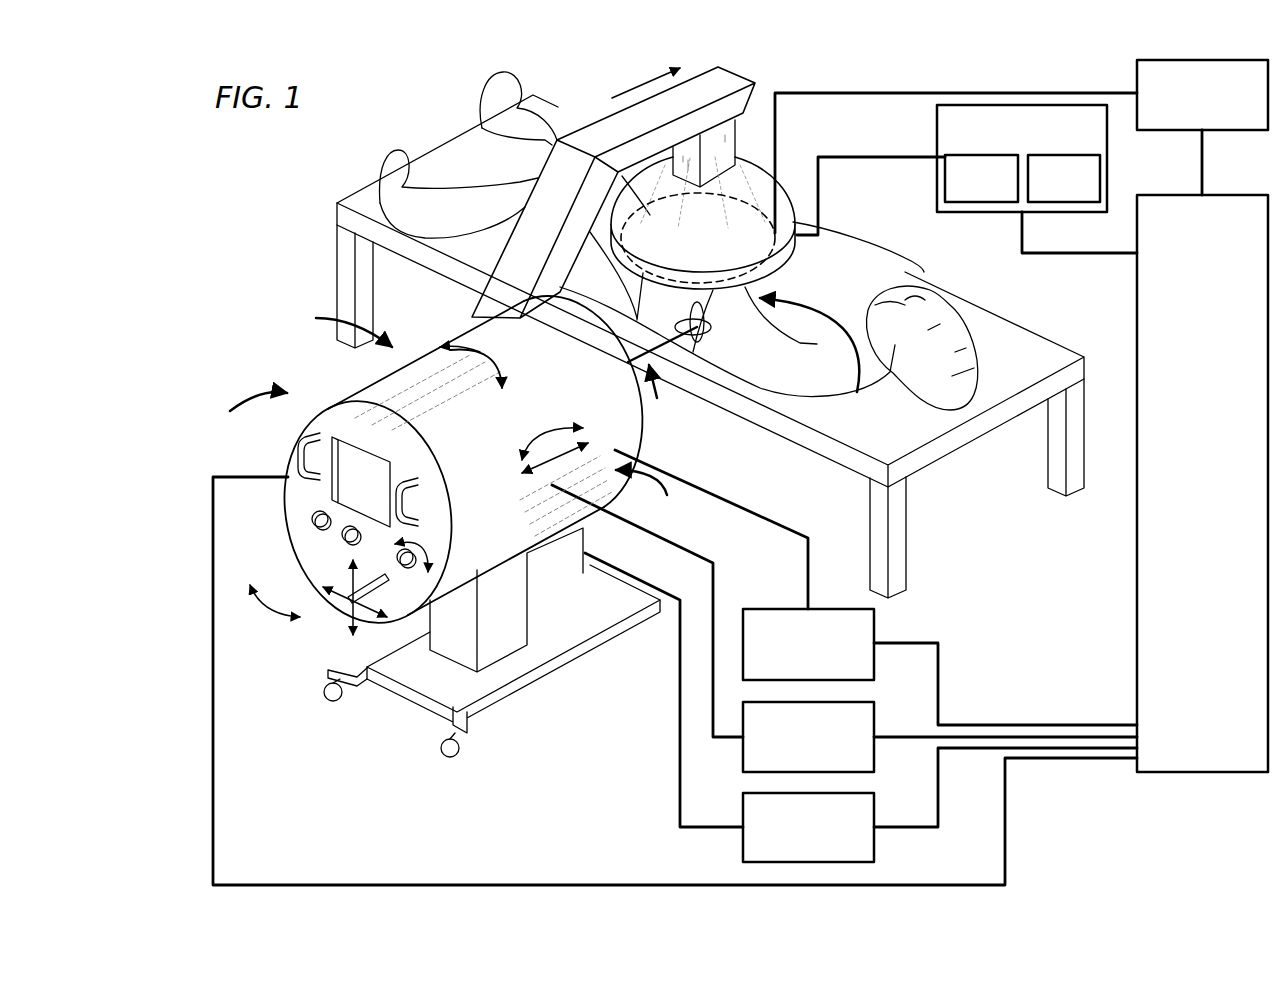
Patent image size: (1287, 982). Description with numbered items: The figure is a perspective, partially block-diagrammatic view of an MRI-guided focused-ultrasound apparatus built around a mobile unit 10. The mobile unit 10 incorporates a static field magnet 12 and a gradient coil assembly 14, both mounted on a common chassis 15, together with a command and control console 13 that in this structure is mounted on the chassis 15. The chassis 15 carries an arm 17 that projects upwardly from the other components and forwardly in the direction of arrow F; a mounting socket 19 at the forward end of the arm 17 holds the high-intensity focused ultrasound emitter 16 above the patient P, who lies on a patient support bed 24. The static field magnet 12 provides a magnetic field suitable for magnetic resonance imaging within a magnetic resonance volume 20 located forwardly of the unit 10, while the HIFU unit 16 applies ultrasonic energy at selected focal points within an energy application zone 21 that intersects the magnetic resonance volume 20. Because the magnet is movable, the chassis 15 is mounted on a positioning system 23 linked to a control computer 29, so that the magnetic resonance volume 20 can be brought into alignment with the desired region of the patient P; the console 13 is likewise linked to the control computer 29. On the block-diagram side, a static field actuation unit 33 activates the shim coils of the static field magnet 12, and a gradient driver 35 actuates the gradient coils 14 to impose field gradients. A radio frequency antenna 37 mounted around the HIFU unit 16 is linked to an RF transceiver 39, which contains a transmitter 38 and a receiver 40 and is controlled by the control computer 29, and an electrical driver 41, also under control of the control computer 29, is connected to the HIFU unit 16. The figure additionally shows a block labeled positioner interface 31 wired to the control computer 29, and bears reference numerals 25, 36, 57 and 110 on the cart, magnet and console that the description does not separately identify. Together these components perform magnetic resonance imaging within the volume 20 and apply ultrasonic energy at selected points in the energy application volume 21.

The mobile unit 10 is at (247, 412).
The static field magnet 12 is at (343, 327).
The command and control console 13 is at (362, 395).
The gradient coil assembly 14 is at (650, 497).
The chassis 15 is at (483, 570).
The HIFU emitter 16 is at (808, 260).
The arm 17 is at (607, 113).
The mounting socket 19 is at (742, 140).
The magnetic resonance volume 20 is at (717, 330).
The energy application zone 21 is at (693, 332).
The positioning system 23 is at (448, 638).
The patient support bed 24 is at (1020, 445).
The wheeled cart platform 25 is at (543, 677).
The control computer 29 is at (1218, 195).
The positioner interface 31 is at (875, 810).
The static field actuation unit 33 is at (875, 717).
The gradient driver 35 is at (840, 605).
The magnet rotation indicator 36 is at (430, 340).
The radio frequency antenna 37 is at (772, 265).
The transmitter 38 is at (1100, 172).
The RF transceiver 39 is at (937, 128).
The receiver 40 is at (945, 187).
The electrical driver 41 is at (1237, 130).
The magnet rear ring 57 is at (627, 437).
The control panel 110 is at (343, 485).
The patient P is at (922, 267).